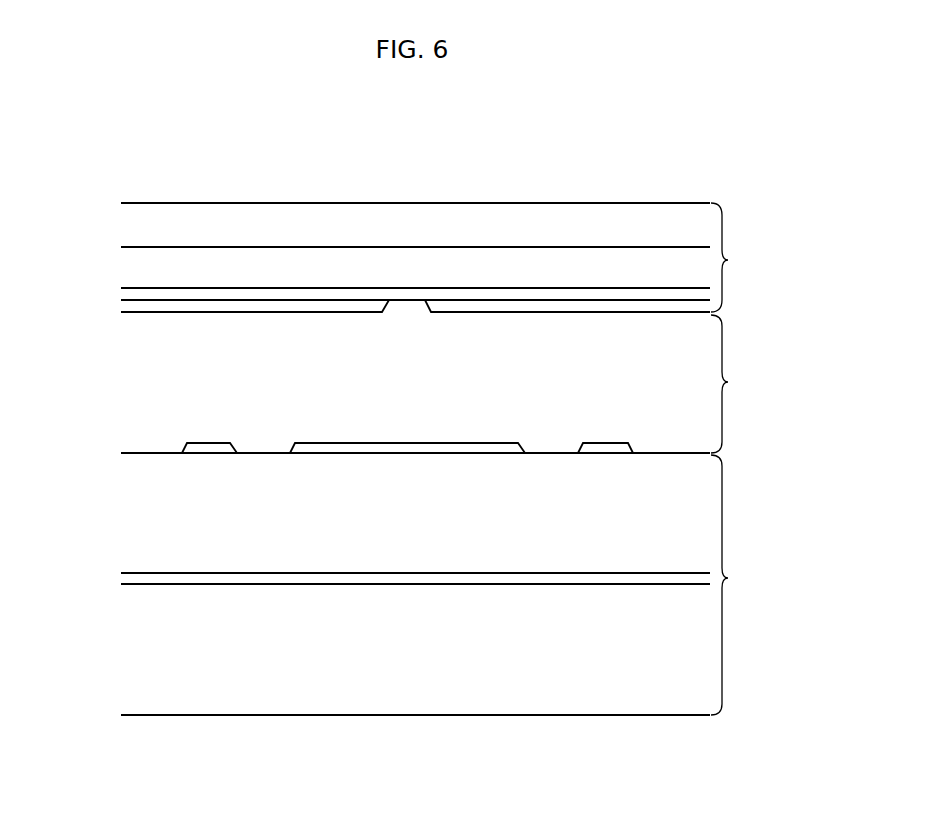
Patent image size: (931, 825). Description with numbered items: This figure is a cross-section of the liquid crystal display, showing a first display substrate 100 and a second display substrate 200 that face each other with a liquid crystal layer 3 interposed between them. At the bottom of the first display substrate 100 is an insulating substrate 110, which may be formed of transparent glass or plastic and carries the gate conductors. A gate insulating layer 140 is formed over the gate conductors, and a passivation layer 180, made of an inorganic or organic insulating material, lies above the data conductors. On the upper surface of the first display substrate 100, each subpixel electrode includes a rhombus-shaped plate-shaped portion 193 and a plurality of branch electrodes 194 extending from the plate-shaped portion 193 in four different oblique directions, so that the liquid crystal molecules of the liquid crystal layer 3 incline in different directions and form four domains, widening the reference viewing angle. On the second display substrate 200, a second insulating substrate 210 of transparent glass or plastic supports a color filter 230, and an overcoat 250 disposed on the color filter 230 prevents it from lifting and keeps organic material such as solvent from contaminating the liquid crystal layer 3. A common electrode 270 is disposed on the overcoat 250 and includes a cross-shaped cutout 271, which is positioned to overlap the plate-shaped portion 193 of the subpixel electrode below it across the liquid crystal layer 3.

The second insulating substrate 210 is at (598, 213).
The color filter 230 is at (525, 262).
The overcoat 250 is at (449, 295).
The common electrode 270 is at (295, 305).
The cross-shaped cutout 271 is at (424, 303).
The second display substrate 200 is at (736, 257).
The liquid crystal layer 3 is at (728, 384).
The first display substrate 100 is at (736, 585).
The branch electrode 194 is at (207, 440).
The plate-shaped portion 193 is at (351, 441).
The passivation layer 180 is at (404, 530).
The gate insulating layer 140 is at (262, 578).
The insulating substrate 110 is at (537, 705).